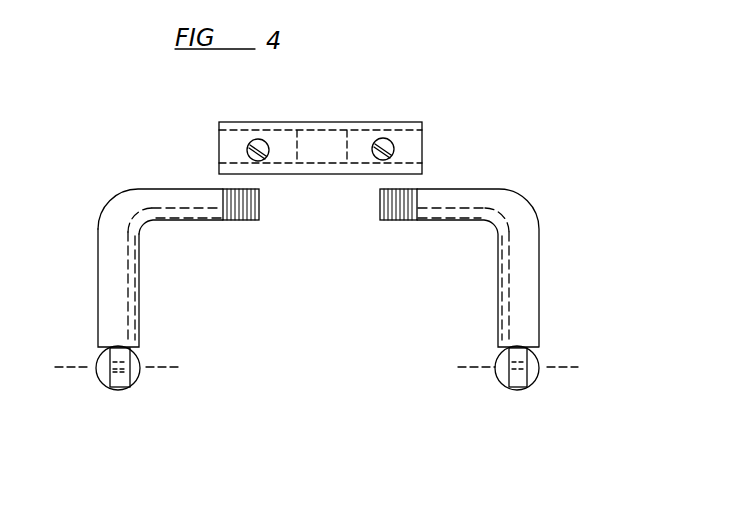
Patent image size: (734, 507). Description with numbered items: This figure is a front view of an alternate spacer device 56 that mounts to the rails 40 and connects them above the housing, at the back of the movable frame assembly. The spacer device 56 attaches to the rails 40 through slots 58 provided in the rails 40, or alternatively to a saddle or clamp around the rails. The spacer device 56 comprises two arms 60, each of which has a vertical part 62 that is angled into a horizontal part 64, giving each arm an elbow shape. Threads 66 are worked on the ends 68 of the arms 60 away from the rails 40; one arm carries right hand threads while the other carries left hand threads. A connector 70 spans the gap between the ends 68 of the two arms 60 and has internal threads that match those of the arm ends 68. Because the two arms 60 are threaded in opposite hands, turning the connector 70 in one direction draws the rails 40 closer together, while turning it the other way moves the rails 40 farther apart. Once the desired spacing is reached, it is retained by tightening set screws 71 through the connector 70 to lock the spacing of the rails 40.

The rail 40 is at (138, 373).
The spacer device 56 is at (515, 190).
The slot 58 is at (130, 390).
The arm 60 is at (317, 235).
The vertical part 62 is at (98, 312).
The horizontal part 64 is at (177, 189).
The threads 66 is at (260, 212).
The end 68 is at (180, 223).
The connector 70 is at (325, 122).
The set screw 71 is at (387, 142).